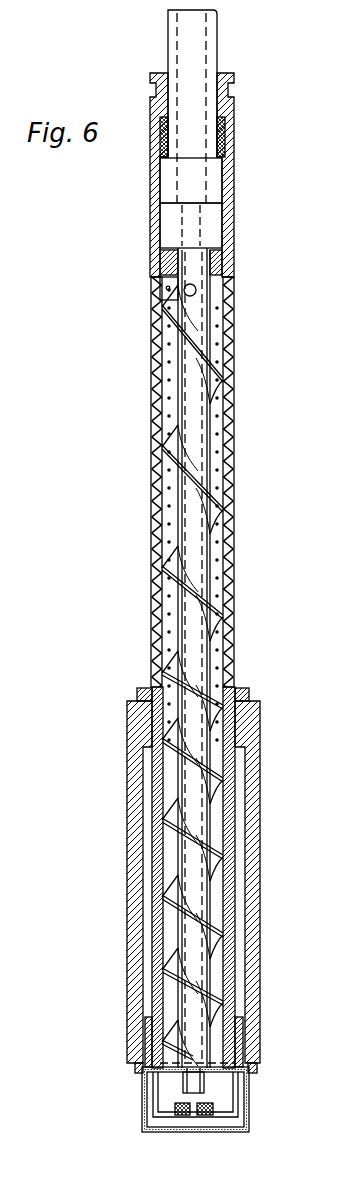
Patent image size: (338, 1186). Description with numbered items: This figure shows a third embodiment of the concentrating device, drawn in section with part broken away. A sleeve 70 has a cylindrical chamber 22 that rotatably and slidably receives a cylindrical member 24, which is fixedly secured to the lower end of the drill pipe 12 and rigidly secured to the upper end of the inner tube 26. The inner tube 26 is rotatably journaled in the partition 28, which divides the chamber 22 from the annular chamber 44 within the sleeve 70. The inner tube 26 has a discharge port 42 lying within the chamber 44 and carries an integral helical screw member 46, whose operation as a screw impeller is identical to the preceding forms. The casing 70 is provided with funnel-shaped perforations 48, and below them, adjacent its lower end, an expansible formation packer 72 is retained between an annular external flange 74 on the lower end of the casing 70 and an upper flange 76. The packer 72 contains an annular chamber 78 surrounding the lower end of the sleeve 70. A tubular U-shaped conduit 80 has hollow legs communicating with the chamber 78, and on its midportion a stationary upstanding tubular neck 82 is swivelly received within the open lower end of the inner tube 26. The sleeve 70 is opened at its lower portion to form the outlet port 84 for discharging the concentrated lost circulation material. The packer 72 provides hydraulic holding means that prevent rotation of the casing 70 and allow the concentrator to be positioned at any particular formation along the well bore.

The drill pipe 12 is at (175, 32).
The cylindrical chamber 22 is at (222, 169).
The cylindrical member 24 is at (213, 214).
The sleeve 70 is at (228, 243).
The partition 28 is at (165, 269).
The annular chamber 44 is at (171, 289).
The discharge port 42 is at (200, 291).
The inner tube 26 is at (185, 397).
The helical screw member 46 is at (163, 447).
The funnel-shaped perforations 48 is at (234, 518).
The upper flange 76 is at (248, 690).
The expansible formation packer 72 is at (262, 777).
The annular chamber 78 is at (240, 898).
The annular external flange 74 is at (253, 1064).
The outlet port 84 is at (215, 1064).
The tubular U-shaped conduit 80 is at (218, 1123).
The tubular neck 82 is at (188, 1101).